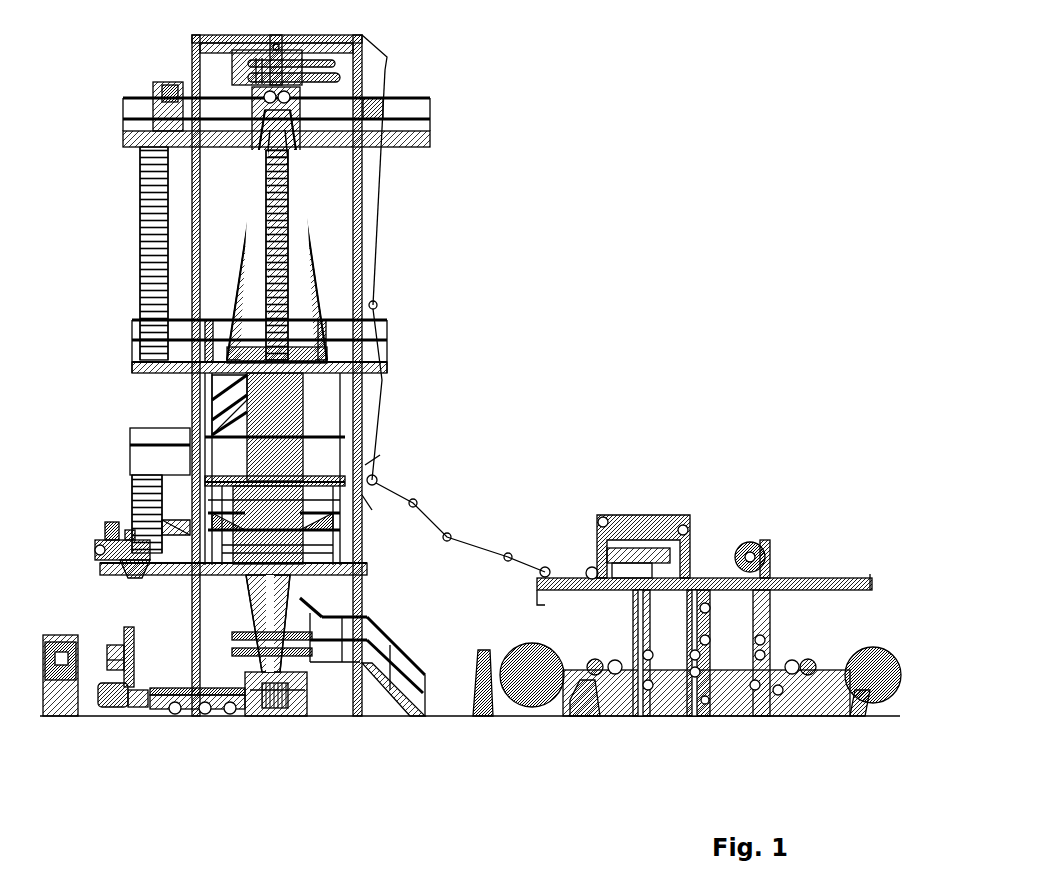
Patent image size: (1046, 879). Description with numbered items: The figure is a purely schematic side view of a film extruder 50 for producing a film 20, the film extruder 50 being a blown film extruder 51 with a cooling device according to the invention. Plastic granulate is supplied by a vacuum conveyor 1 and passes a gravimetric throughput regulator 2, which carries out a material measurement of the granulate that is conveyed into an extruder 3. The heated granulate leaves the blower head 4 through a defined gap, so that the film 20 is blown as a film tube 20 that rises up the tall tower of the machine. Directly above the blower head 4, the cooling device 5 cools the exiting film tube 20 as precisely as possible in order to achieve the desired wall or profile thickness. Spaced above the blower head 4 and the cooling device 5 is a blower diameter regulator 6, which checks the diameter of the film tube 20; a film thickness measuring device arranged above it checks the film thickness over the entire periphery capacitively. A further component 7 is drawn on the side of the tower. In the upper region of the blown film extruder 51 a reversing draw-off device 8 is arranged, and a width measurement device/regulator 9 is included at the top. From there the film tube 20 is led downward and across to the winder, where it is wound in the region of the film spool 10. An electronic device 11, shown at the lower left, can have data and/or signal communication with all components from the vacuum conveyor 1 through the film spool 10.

The vacuum conveyor 1 is at (150, 554).
The gravimetric throughput regulator 2 is at (130, 652).
The extruder 3 is at (220, 706).
The blower head 4 is at (300, 690).
The cooling device 5 is at (232, 652).
The blower diameter regulator 6 is at (292, 590).
The side unit 7 is at (200, 445).
The reversing draw-off device 8 is at (190, 131).
The width measurement device/regulator 9 is at (383, 68).
The film spool 10 is at (797, 592).
The electronic device 11 is at (60, 633).
The film 20 is at (393, 200).
The film extruder 50 is at (557, 100).
The blown film extruder 51 is at (362, 657).